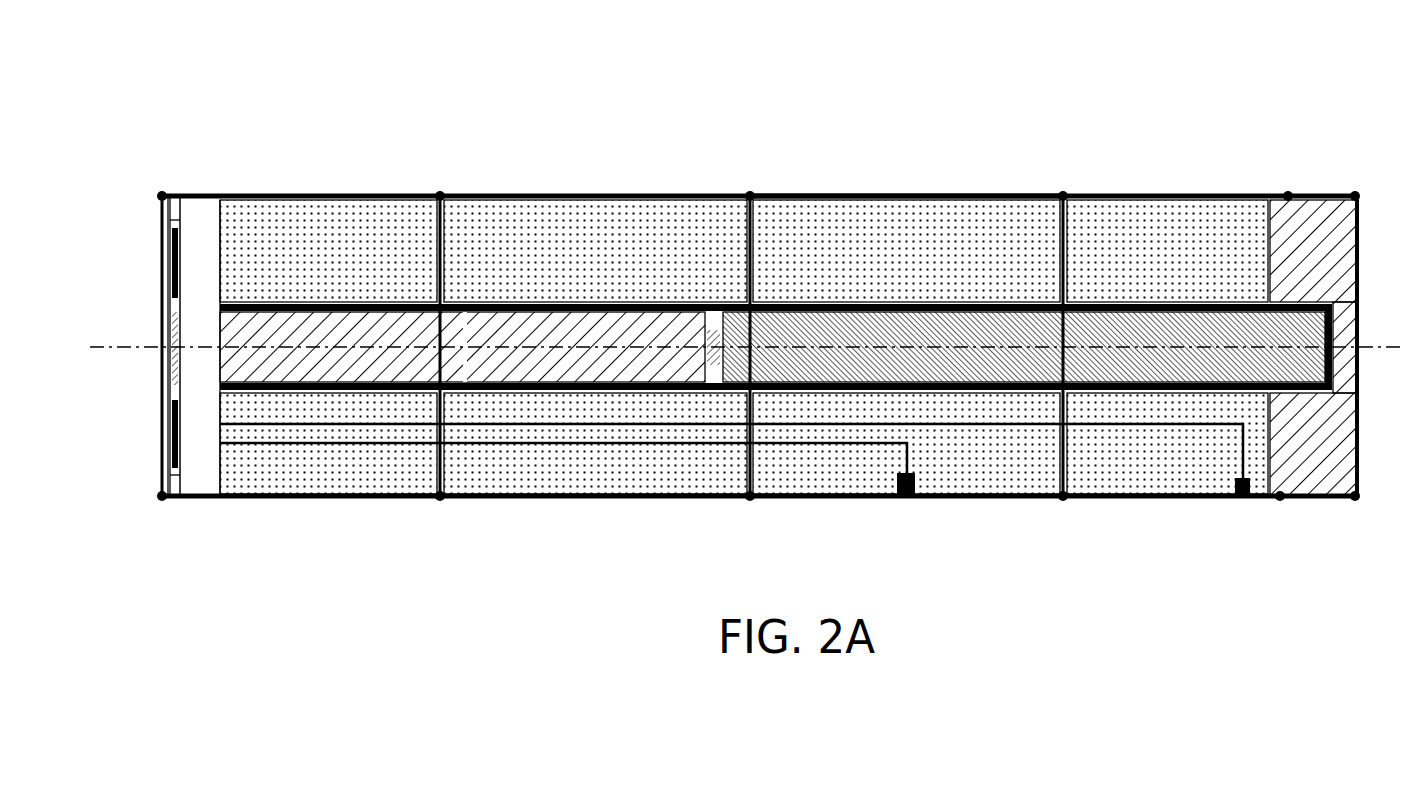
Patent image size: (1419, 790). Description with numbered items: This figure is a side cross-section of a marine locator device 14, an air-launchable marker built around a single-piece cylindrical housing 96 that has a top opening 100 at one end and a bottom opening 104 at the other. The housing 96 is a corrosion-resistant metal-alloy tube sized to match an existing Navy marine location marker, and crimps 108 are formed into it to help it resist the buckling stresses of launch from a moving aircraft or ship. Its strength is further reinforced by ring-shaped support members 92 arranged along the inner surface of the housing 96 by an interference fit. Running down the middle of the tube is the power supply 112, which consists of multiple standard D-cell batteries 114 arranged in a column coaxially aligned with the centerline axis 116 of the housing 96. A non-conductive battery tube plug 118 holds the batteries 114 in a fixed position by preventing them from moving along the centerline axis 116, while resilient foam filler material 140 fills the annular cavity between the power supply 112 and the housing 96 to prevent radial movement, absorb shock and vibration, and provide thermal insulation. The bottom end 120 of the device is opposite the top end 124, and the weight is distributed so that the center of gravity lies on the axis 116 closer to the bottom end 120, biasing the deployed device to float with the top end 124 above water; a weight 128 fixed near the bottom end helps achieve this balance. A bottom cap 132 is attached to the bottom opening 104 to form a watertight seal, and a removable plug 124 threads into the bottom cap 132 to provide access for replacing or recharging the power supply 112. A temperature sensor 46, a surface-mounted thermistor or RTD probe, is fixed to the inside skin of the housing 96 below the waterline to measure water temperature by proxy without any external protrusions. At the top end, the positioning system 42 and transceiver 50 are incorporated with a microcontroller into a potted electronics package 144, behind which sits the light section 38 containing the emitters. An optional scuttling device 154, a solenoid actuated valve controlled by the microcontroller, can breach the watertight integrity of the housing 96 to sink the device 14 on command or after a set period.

The marine locator device 14 is at (813, 90).
The light section 38 is at (173, 500).
The positioning system 42 is at (161, 272).
The temperature sensor 46 is at (905, 498).
The transceiver 50 is at (161, 430).
The support members 92 is at (437, 235).
The housing 96 is at (820, 196).
The top opening 100 is at (166, 194).
The bottom opening 104 is at (1355, 196).
The crimps 108 is at (440, 500).
The power supply 112 is at (585, 395).
The batteries 114 is at (502, 330).
The centerline axis 116 is at (146, 350).
The battery tube plug 118 is at (920, 300).
The bottom end 120 is at (1362, 178).
The top end 124 is at (142, 186).
The weight 128 is at (1318, 487).
The bottom cap 132 is at (1360, 280).
The filler material 140 is at (565, 215).
The electronics package 144 is at (207, 480).
The scuttling device 154 is at (1241, 500).